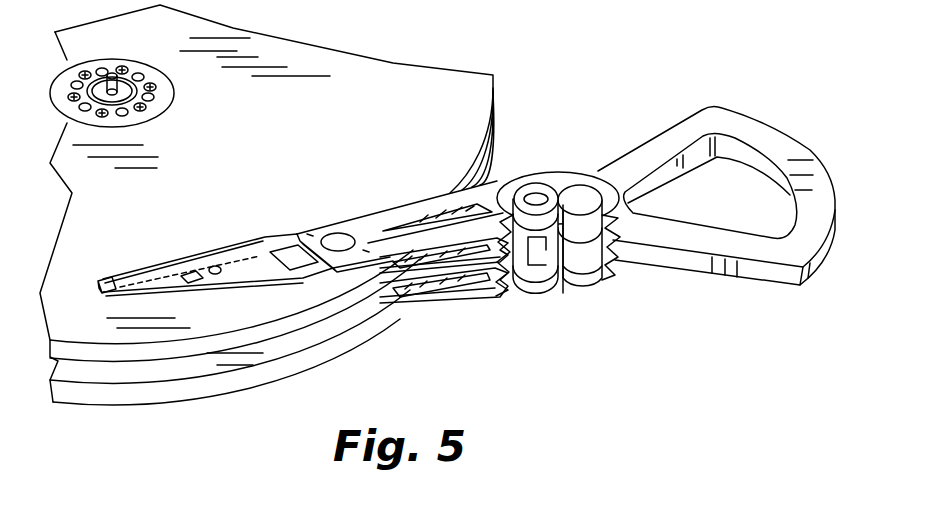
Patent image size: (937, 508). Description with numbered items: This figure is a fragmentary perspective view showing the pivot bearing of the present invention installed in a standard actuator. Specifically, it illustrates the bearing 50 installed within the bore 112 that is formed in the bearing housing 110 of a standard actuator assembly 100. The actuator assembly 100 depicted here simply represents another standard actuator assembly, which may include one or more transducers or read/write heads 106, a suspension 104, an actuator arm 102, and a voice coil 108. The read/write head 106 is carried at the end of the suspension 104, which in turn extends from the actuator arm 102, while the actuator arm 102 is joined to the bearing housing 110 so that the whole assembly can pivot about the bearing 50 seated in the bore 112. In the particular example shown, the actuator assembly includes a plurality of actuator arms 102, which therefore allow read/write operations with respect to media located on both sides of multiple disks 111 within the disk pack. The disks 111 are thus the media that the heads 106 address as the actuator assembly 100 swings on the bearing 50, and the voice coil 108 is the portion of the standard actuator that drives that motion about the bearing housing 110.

The bearing 50 is at (704, 189).
The actuator assembly 100 is at (352, 240).
The actuator arm 102 is at (363, 230).
The suspension 104 is at (250, 262).
The read/write head 106 is at (98, 288).
The voice coil 108 is at (688, 112).
The bearing housing 110 is at (537, 175).
The disks 111 is at (213, 143).
The bore 112 is at (563, 186).